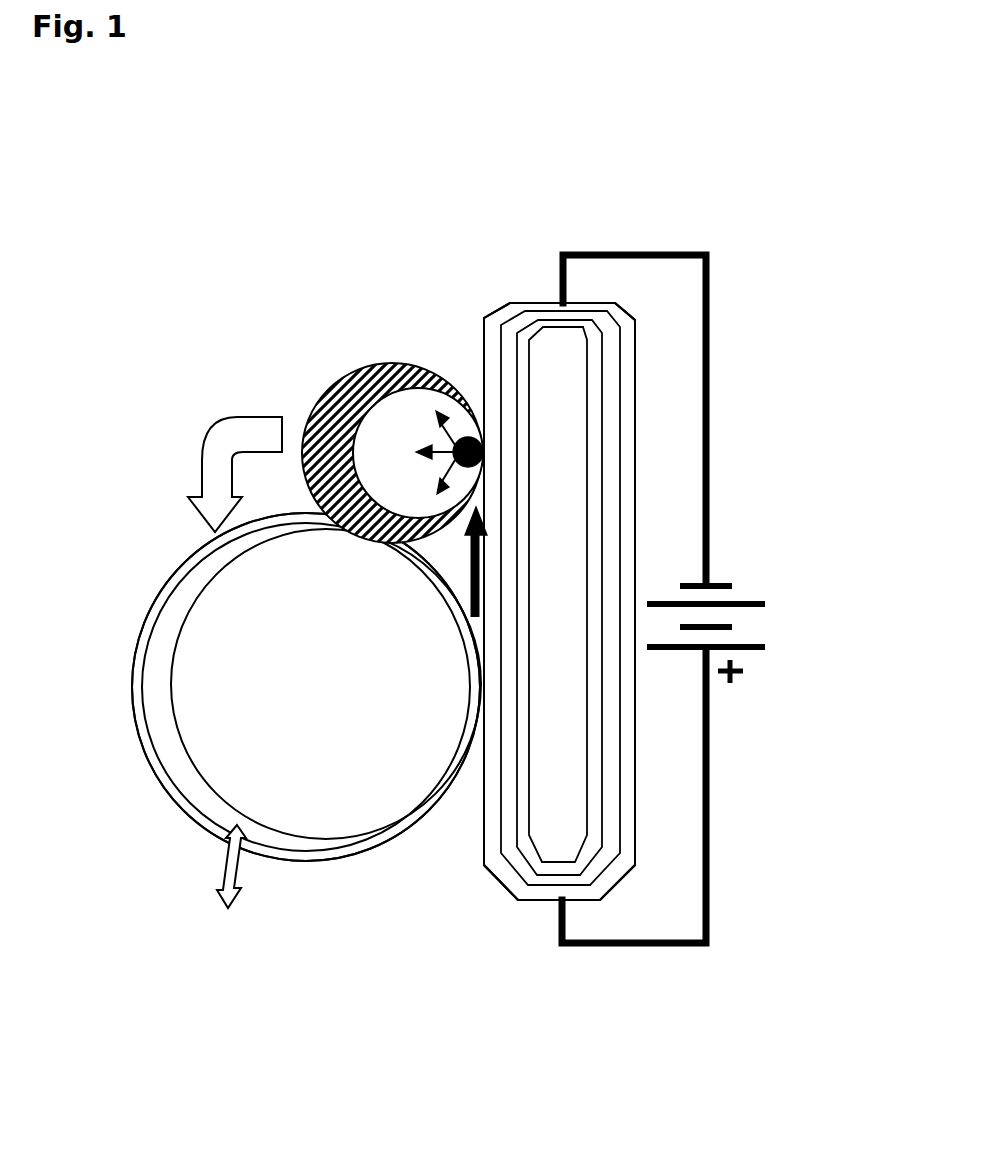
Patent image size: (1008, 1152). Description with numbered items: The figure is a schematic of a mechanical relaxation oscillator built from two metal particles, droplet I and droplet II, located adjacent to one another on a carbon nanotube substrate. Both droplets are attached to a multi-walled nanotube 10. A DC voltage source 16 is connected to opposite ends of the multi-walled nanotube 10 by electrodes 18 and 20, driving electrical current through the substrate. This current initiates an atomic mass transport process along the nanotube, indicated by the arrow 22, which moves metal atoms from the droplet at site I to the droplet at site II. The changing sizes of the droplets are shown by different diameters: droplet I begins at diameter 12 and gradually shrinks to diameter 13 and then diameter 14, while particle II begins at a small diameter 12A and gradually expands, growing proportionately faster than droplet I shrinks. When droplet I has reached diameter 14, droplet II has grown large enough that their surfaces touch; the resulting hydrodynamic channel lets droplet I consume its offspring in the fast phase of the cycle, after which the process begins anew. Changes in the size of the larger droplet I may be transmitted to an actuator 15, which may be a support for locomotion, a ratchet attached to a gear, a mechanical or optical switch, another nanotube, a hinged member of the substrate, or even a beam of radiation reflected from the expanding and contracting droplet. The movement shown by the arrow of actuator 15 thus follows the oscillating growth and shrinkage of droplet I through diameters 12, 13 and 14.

The multi-walled nanotube 10 is at (630, 502).
The diameter 12 is at (180, 572).
The small diameter 12A is at (483, 443).
The diameter 13 is at (158, 615).
The diameter 14 is at (180, 698).
The actuator 15 is at (243, 868).
The DC voltage source 16 is at (732, 626).
The electrode 18 is at (555, 922).
The electrode 20 is at (557, 302).
The arrow 22 is at (480, 576).
The droplet I is at (235, 735).
The droplet II is at (320, 398).